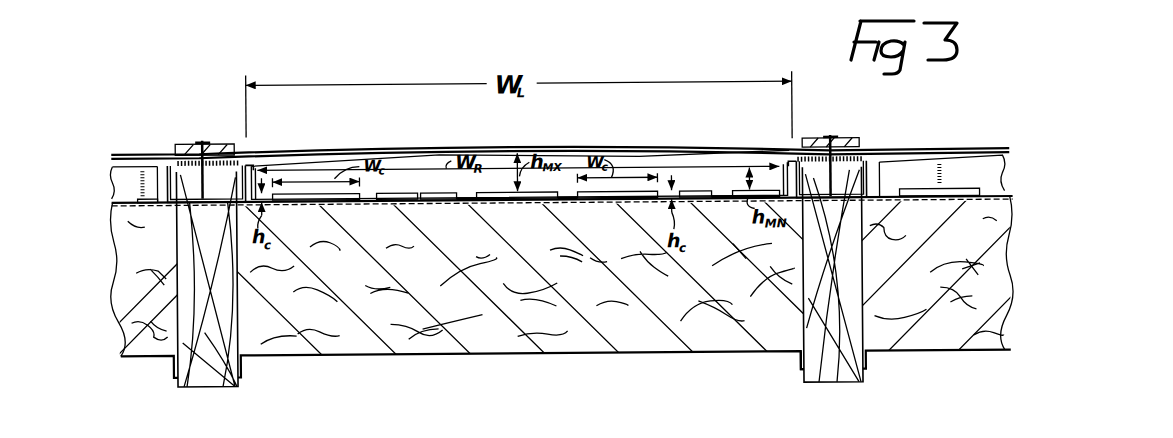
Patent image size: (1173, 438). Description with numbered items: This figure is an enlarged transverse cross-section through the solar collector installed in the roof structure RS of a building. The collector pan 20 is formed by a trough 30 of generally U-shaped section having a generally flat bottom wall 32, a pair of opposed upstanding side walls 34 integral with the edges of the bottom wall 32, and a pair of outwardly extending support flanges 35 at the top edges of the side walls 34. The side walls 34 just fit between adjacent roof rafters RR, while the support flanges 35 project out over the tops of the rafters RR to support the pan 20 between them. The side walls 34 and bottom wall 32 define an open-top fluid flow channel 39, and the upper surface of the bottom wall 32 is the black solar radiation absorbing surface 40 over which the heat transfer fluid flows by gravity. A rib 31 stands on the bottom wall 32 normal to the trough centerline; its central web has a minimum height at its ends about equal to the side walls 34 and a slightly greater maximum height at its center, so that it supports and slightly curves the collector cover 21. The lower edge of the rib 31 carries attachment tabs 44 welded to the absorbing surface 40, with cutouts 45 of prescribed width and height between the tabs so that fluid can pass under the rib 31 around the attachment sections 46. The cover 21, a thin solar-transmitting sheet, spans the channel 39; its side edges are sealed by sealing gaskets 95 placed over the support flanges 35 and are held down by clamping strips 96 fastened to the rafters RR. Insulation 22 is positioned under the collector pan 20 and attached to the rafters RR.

The collector pan 20 is at (166, 210).
The collector cover 21 is at (144, 161).
The insulation 22 is at (603, 357).
The trough 30 is at (328, 209).
The rib 31 is at (132, 181).
The bottom wall 32 is at (519, 200).
The side wall 34 is at (241, 188).
The support flange 35 is at (212, 202).
The fluid flow channel 39 is at (716, 204).
The solar radiation absorbing surface 40 is at (600, 198).
The attachment tab 44 is at (472, 202).
The cutout 45 is at (413, 198).
The attachment section 46 is at (349, 198).
The sealing gasket 95 is at (240, 157).
The clamping strip 96 is at (216, 146).
The roof rafter RR is at (226, 316).
The roof structure RS is at (800, 381).